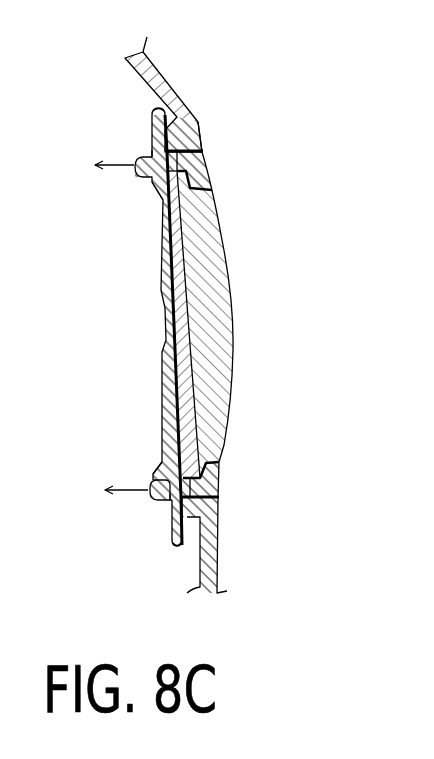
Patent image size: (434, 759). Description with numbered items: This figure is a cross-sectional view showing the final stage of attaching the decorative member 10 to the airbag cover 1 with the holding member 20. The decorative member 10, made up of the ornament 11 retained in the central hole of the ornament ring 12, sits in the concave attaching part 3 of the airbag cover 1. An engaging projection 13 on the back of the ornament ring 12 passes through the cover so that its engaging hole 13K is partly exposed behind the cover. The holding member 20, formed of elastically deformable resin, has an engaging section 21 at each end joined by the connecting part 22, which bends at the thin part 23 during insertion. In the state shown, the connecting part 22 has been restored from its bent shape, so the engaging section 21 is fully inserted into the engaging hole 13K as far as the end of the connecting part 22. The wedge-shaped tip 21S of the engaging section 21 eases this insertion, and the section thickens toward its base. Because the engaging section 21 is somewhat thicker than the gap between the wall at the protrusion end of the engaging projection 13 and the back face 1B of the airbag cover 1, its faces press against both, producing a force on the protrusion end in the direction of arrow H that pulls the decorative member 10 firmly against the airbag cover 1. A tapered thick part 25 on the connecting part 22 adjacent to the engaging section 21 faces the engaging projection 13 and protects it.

The airbag cover 1 is at (207, 335).
The back face of the airbag cover 1B is at (199, 567).
The attaching part 3 is at (218, 401).
The decorative member 10 is at (255, 310).
The ornament 11 is at (218, 228).
The ornament ring 12 is at (207, 168).
The engaging projection 13 is at (149, 178).
The engaging hole 13K is at (152, 150).
The holding member 20 is at (116, 325).
The engaging section 21 is at (151, 122).
The tip 21S is at (124, 60).
The connecting part 22 is at (160, 292).
The thin part 23 is at (160, 327).
The thick part 25 is at (157, 190).
The arrow H is at (156, 365).